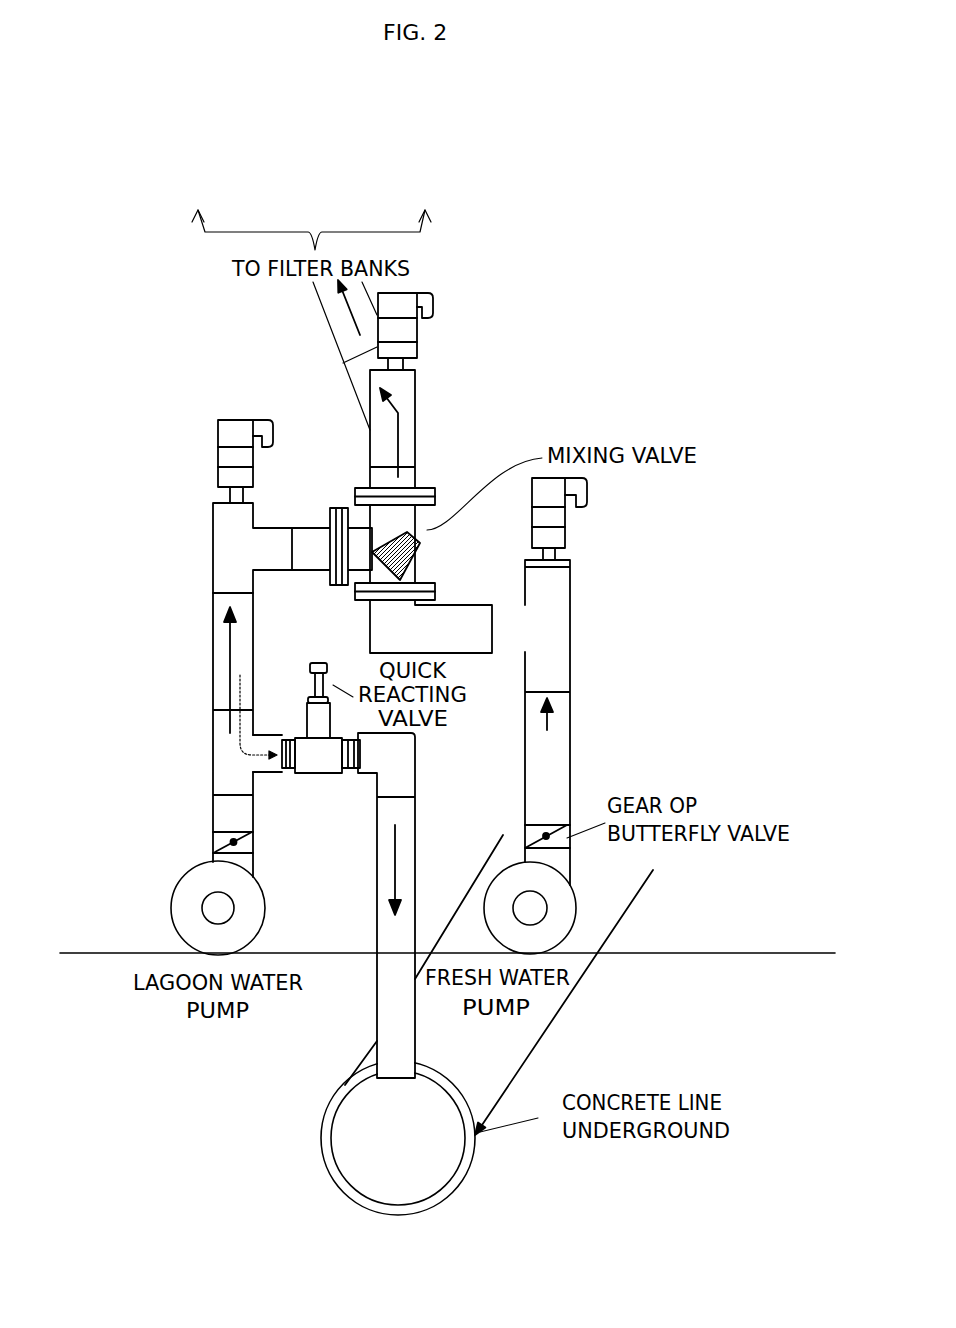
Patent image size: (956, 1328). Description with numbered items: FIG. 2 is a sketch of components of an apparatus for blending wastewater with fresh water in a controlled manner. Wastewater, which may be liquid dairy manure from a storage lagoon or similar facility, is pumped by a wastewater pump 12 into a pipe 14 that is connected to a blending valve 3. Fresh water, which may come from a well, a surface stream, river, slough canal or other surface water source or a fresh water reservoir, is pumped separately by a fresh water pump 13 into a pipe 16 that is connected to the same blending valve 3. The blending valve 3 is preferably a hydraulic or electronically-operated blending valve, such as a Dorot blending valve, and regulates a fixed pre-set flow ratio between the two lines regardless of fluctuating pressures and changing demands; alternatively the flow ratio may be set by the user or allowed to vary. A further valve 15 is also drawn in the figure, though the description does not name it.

The blending valve 3 is at (423, 531).
The wastewater pump 12 is at (172, 910).
The fresh water pump 13 is at (575, 908).
The pipe 14 is at (213, 620).
The quick reacting valve 15 is at (315, 648).
The pipe 16 is at (572, 725).